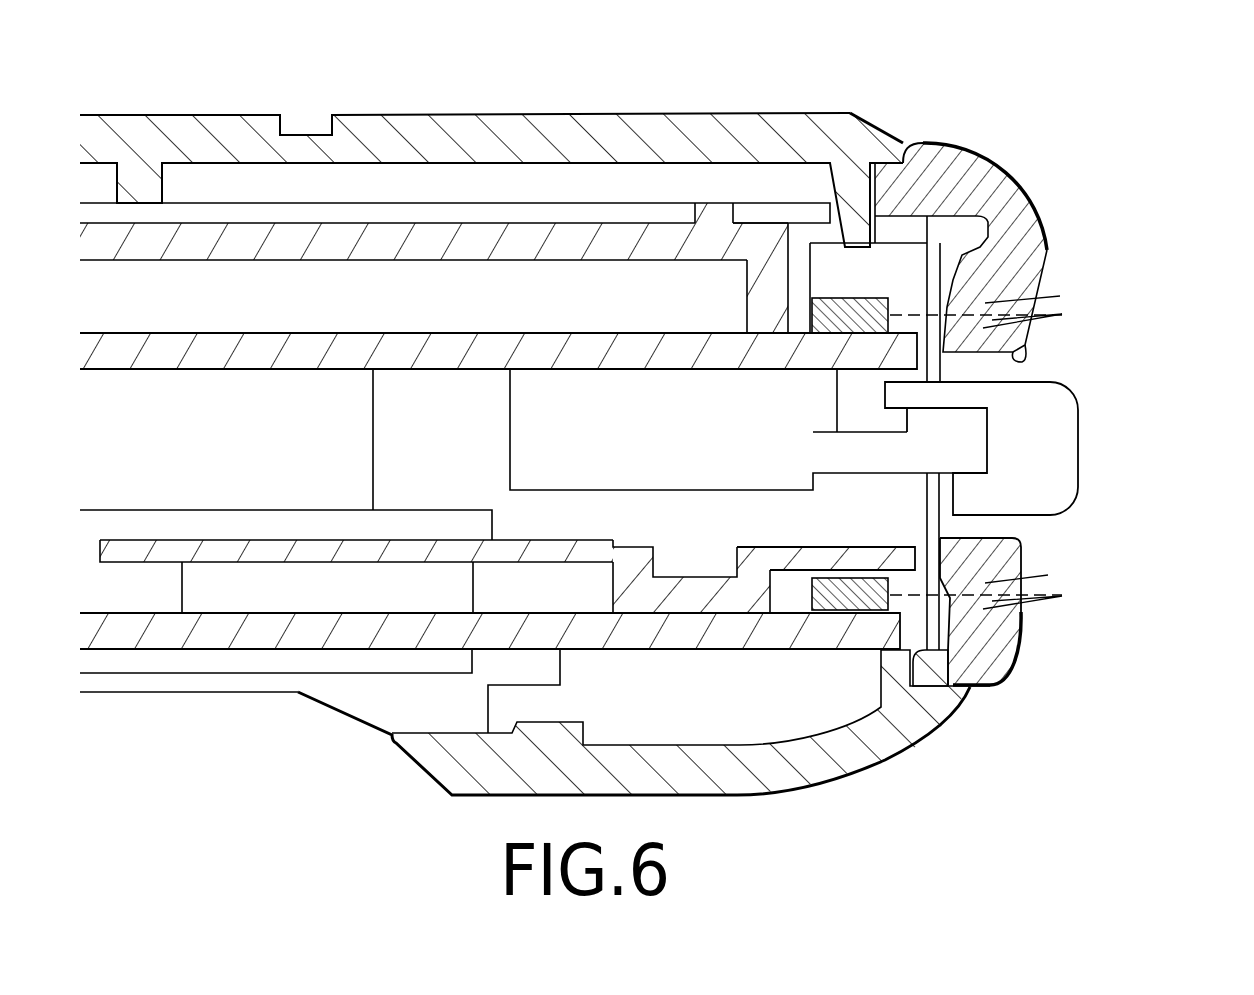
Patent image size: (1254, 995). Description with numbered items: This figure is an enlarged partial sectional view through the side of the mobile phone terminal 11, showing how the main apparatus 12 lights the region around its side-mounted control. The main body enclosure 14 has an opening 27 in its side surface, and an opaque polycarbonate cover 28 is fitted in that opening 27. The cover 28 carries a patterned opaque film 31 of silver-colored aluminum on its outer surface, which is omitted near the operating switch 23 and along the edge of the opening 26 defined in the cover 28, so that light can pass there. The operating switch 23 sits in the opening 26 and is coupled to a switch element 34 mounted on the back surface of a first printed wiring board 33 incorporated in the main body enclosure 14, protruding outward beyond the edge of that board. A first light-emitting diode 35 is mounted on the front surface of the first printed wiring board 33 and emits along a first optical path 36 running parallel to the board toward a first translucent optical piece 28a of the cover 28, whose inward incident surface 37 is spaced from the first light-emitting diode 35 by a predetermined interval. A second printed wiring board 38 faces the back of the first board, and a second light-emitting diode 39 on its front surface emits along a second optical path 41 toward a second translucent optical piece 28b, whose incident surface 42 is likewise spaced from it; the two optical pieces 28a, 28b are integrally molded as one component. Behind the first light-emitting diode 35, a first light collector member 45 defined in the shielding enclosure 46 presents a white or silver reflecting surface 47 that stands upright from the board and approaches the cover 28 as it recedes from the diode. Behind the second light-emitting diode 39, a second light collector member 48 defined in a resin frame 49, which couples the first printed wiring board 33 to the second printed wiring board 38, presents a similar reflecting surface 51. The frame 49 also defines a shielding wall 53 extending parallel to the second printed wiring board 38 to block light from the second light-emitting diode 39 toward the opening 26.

The mobile phone terminal 11 is at (1167, 83).
The main apparatus 12 is at (636, 77).
The main body enclosure 14 is at (476, 114).
The operating switch 23 is at (1078, 494).
The opening 26 is at (1045, 351).
The opening 27 is at (916, 142).
The cover 28 is at (1048, 249).
The first translucent optical piece 28a is at (1011, 290).
The second translucent optical piece 28b is at (1003, 608).
The opaque film 31 is at (1046, 242).
The first printed wiring board 33 is at (304, 371).
The switch element 34 is at (510, 467).
The first light-emitting diode 35 is at (862, 298).
The first optical path 36 is at (920, 315).
The incident surface 37 is at (950, 283).
The second printed wiring board 38 is at (643, 650).
The second light-emitting diode 39 is at (818, 576).
The second optical path 41 is at (918, 547).
The incident surface 42 is at (944, 640).
The first light collector member 45 is at (747, 321).
The shielding enclosure 46 is at (622, 262).
The reflecting surface 47 is at (790, 258).
The second light collector member 48 is at (735, 550).
The frame 49 is at (571, 540).
The reflecting surface 51 is at (772, 572).
The shielding wall 53 is at (850, 545).